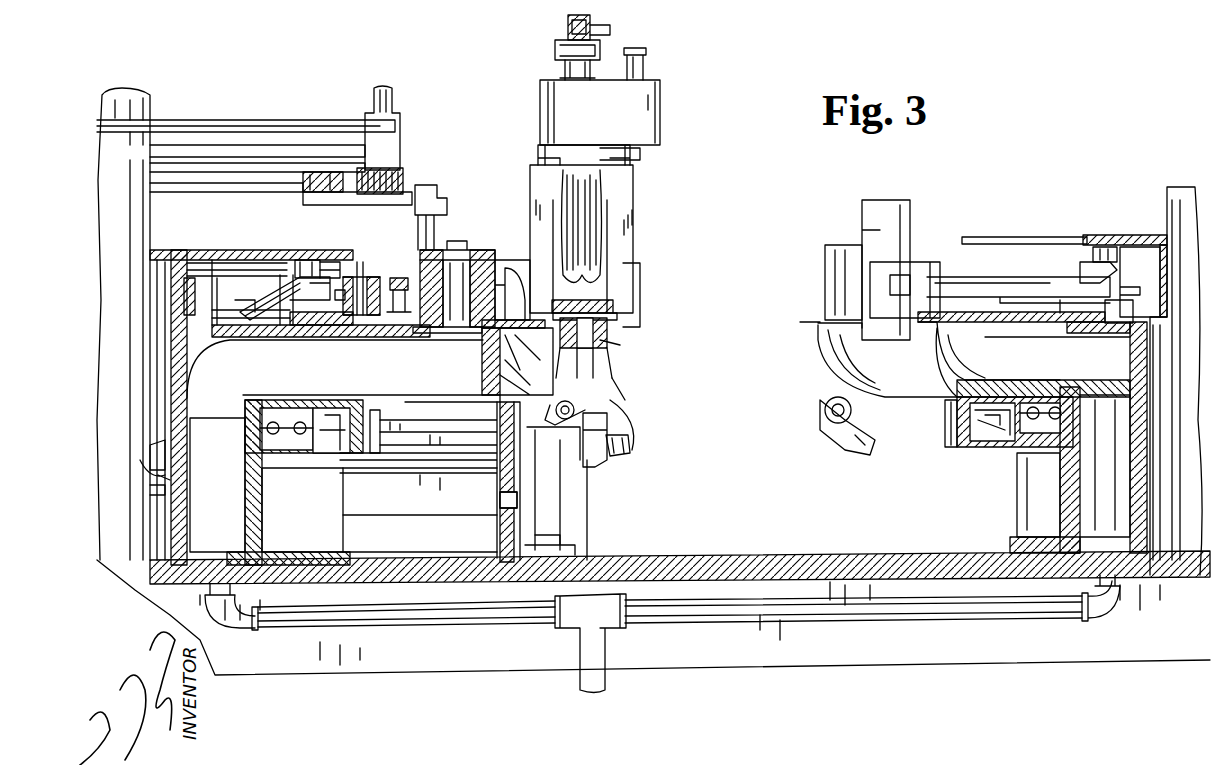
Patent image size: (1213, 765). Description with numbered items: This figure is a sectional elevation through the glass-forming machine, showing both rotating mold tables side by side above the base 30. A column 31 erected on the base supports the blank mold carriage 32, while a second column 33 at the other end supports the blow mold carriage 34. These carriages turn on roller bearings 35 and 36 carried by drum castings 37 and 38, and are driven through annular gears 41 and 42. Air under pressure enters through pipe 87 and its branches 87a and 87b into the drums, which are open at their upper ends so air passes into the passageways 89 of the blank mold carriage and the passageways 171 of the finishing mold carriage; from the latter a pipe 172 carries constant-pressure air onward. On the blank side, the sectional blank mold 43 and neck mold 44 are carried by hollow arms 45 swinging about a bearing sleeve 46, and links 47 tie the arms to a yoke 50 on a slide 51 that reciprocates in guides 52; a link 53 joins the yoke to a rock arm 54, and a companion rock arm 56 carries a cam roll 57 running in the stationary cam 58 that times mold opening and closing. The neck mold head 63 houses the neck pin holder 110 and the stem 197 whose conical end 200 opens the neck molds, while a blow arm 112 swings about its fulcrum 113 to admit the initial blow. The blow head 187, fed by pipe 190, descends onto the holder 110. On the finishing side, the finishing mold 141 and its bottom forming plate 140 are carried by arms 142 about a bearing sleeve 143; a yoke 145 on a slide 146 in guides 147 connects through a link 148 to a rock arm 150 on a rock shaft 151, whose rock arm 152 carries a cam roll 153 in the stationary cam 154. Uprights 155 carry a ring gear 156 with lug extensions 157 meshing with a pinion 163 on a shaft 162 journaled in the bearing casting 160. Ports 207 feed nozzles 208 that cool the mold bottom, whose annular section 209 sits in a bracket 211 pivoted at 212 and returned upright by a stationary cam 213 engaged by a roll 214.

The base 30 is at (820, 556).
The column 31 is at (1167, 196).
The blank mold carriage 32 is at (952, 431).
The column 33 is at (150, 103).
The blow mold carriage 34 is at (640, 323).
The roller bearing 35 is at (1008, 447).
The roller bearing 36 is at (300, 463).
The drum casting 37 is at (1062, 495).
The drum casting 38 is at (233, 516).
The annular gear 41 is at (945, 417).
The annular gear 42 is at (380, 417).
The blank mold 43 is at (920, 191).
The neck mold 44 is at (538, 151).
The mold arm 45 is at (900, 318).
The bearing sleeve 46 is at (825, 249).
The link 47 is at (920, 262).
The yoke 50 is at (998, 249).
The slide 51 is at (1015, 293).
The guide 52 is at (210, 310).
The link 53 is at (1067, 300).
The rock arm 54 is at (1118, 283).
The rock arm 56 is at (1080, 271).
The cam roll 57 is at (1115, 240).
The stationary cam 58 is at (1095, 252).
The head 63 is at (540, 103).
The pipe 87 is at (606, 681).
The pipe 87a is at (748, 626).
The pipe 87b is at (482, 626).
The passageway 89 is at (1024, 359).
The neck pin holder 110 is at (563, 71).
The blow arm 112 is at (845, 448).
The fulcrum 113 is at (825, 408).
The bottom forming plate 140 is at (640, 301).
The finishing mold 141 is at (630, 206).
The mold arm 142 is at (508, 260).
The bearing sleeve 143 is at (462, 255).
The yoke 145 is at (395, 278).
The slide 146 is at (360, 325).
The guide 147 is at (290, 325).
The link 148 is at (360, 270).
The rock arm 150 is at (300, 330).
The rock shaft 151 is at (240, 268).
The rock arm 152 is at (290, 262).
The cam roll 153 is at (320, 262).
The stationary cam 154 is at (335, 262).
The upright 155 is at (440, 222).
The ring gear 156 is at (265, 140).
The lug extension 157 is at (412, 196).
The bearing casting 160 is at (322, 118).
The shaft 162 is at (393, 100).
The pinion 163 is at (405, 170).
The passageway 171 is at (325, 407).
The pipe 172 is at (148, 471).
The blow head 187 is at (555, 48).
The pipe 190 is at (612, 34).
The stem 197 is at (645, 63).
The conical end 200 is at (642, 153).
The port 207 is at (482, 391).
The nozzle 208 is at (605, 373).
The annular section 209 is at (610, 341).
The bracket 211 is at (612, 363).
The pivot 212 is at (578, 409).
The stationary cam 213 is at (608, 466).
The roll 214 is at (632, 442).